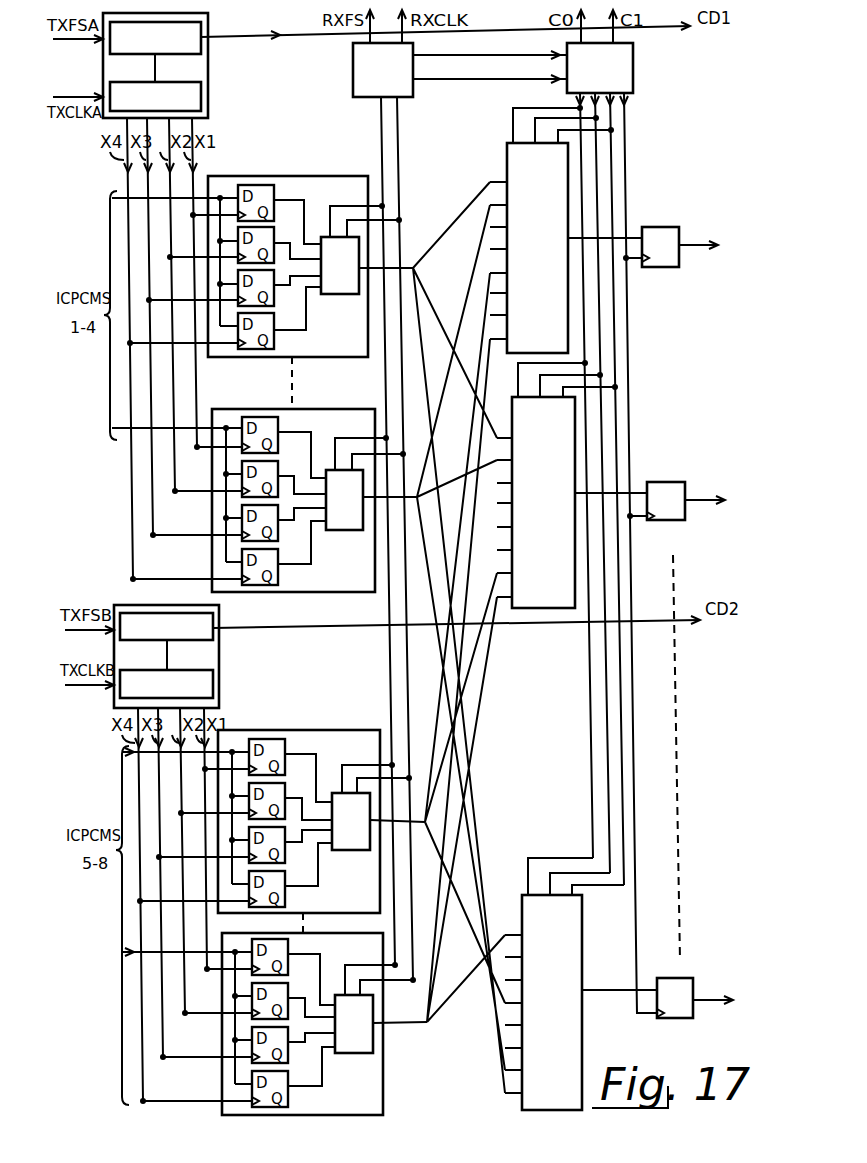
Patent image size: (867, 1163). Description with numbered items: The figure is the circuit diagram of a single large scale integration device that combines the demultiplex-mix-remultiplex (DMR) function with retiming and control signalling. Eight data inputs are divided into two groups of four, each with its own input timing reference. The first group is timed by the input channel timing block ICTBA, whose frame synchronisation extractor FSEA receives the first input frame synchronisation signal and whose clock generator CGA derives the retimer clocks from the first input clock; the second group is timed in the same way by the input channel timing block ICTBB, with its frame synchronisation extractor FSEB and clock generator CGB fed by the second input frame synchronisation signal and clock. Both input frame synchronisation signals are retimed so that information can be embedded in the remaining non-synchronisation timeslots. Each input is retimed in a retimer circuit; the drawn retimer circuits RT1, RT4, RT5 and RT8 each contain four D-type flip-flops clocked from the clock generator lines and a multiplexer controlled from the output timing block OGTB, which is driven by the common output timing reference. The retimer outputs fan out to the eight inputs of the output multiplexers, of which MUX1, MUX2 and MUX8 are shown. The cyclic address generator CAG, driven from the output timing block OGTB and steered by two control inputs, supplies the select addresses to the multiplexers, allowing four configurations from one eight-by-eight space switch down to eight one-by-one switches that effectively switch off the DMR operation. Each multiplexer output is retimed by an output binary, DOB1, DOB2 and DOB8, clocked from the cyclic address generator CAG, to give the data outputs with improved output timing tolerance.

The input channel timing block A ICTBA is at (189, 65).
The frame synchronisation extractor A FSEA is at (155, 38).
The clock generator A CGA is at (217, 78).
The input channel timing block B ICTBB is at (202, 656).
The frame synchronisation extractor B FSEB is at (166, 626).
The clock generator B CGB is at (229, 667).
The output timing block OGTB is at (460, 495).
The cyclic address generator CAG is at (612, 511).
The retimer circuit 1 RT1 is at (262, 266).
The retimer circuit 4 RT4 is at (264, 500).
The retimer circuit 5 RT5 is at (273, 821).
The retimer circuit 8 RT8 is at (274, 1024).
The output multiplexer 1 MUX1 is at (566, 229).
The output multiplexer 2 MUX2 is at (572, 484).
The output multiplexer 8 MUX8 is at (581, 984).
The data output binary 1 DOB1 is at (678, 258).
The data output binary 2 DOB2 is at (683, 513).
The data output binary 8 DOB8 is at (699, 1012).